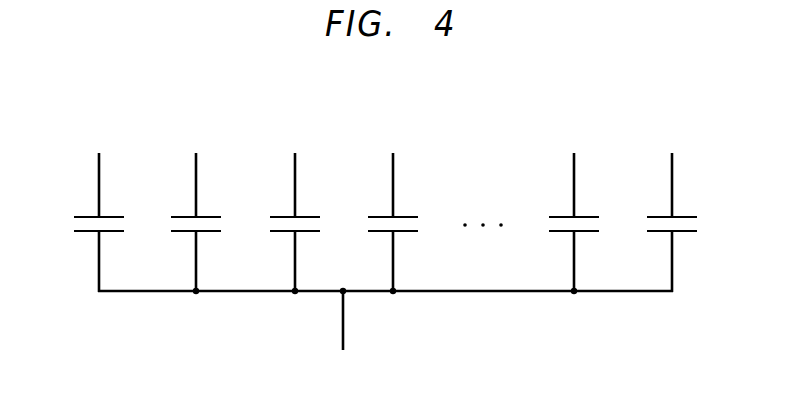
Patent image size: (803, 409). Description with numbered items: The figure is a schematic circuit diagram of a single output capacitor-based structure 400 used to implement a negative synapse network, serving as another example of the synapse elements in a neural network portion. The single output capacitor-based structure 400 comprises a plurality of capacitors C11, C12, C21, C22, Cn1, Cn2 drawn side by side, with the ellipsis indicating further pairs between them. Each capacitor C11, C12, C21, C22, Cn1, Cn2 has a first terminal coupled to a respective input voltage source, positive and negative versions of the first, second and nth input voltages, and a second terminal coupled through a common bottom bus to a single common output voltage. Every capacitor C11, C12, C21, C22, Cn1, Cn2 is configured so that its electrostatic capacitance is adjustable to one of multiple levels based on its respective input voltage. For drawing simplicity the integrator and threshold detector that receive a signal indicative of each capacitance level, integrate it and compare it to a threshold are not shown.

The single output capacitor-based structure 400 is at (370, 86).
The capacitor C11 is at (95, 208).
The capacitor C12 is at (192, 208).
The capacitor C21 is at (291, 208).
The capacitor C22 is at (389, 208).
The capacitor Cn1 is at (570, 208).
The capacitor Cn2 is at (668, 208).